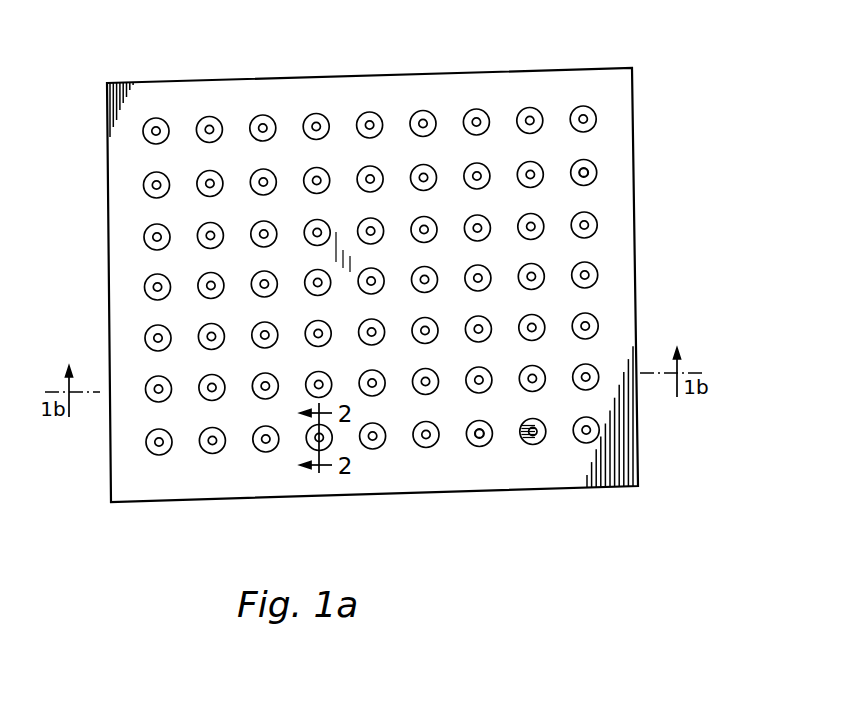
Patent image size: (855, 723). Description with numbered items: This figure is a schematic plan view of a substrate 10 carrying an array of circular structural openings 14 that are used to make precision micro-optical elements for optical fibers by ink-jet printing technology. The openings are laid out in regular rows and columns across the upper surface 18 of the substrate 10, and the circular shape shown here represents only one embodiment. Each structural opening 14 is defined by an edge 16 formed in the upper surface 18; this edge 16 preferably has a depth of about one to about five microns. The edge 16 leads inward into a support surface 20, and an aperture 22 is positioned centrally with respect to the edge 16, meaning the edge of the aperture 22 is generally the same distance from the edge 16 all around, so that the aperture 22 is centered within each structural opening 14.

The substrate 10 is at (431, 280).
The structural opening 14 is at (155, 118).
The edge 16 is at (593, 163).
The upper surface 18 is at (623, 262).
The support surface 20 is at (590, 173).
The aperture 22 is at (585, 178).